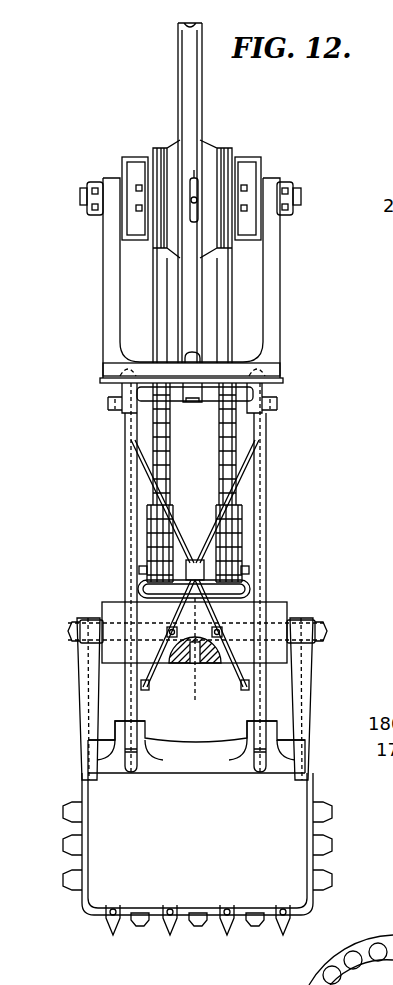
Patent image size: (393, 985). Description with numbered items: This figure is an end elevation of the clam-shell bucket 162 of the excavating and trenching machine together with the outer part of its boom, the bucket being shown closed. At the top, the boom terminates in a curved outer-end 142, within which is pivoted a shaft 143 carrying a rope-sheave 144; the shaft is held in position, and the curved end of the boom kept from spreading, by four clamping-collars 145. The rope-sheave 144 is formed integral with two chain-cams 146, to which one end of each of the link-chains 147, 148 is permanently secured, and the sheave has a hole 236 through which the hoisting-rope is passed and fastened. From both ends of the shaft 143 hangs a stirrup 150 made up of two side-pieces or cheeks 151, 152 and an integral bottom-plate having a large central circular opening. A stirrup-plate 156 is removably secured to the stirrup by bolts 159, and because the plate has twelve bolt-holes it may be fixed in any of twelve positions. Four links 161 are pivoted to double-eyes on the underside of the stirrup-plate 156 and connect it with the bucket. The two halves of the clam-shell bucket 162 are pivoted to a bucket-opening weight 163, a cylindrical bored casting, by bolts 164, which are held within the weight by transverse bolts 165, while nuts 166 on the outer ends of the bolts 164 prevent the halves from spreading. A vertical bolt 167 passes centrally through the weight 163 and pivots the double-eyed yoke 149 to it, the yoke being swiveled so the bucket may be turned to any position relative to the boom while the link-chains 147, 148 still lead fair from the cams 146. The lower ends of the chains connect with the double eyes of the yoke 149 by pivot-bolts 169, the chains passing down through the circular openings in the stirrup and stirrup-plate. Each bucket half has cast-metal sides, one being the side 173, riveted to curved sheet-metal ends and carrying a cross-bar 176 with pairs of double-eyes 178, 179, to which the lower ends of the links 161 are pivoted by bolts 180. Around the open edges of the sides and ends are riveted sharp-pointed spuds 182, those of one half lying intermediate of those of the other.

The curved outer-end 142 is at (125, 160).
The shaft 143 is at (301, 195).
The rope-sheave 144 is at (178, 93).
The clamping-collars 145 is at (96, 216).
The chain-cams 146 is at (160, 148).
The link-chain 147 is at (221, 445).
The link-chain 148 is at (170, 468).
The yoke 149 is at (252, 588).
The stirrup 150 is at (283, 375).
The side-piece or cheek 151 is at (276, 298).
The side-piece or cheek 152 is at (162, 278).
The stirrup-plate 156 is at (283, 384).
The bolts 159 is at (197, 388).
The links 161 is at (124, 519).
The clam-shell bucket 162 is at (197, 875).
The bucket-opening weight 163 is at (289, 607).
The bolts 164 is at (66, 632).
The transverse bolts 165 is at (168, 628).
The nuts 166 is at (78, 640).
The vertical bolt 167 is at (201, 649).
The pivot-bolts 169 is at (139, 571).
The cast-metal side 173 is at (197, 840).
The cross-bar 176 is at (196, 747).
The double-eyes 178 is at (147, 725).
The double-eyes 179 is at (248, 725).
The bolts 180 is at (115, 732).
The spuds 182 is at (65, 878).
The hole 236 is at (197, 172).